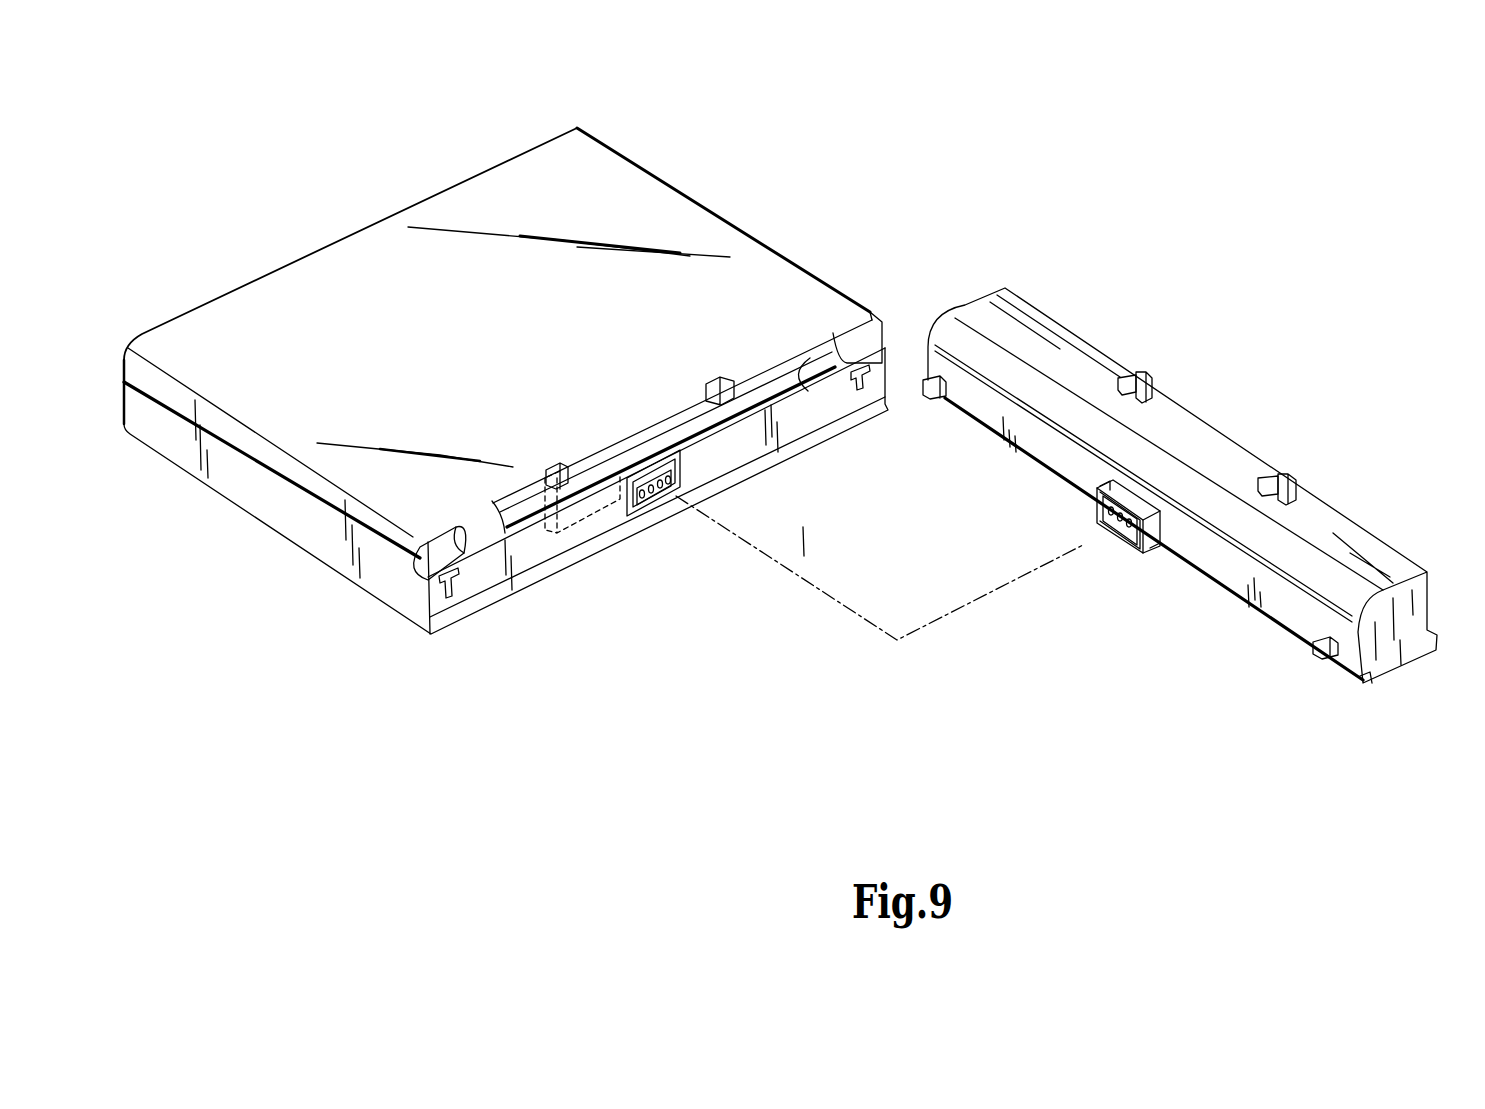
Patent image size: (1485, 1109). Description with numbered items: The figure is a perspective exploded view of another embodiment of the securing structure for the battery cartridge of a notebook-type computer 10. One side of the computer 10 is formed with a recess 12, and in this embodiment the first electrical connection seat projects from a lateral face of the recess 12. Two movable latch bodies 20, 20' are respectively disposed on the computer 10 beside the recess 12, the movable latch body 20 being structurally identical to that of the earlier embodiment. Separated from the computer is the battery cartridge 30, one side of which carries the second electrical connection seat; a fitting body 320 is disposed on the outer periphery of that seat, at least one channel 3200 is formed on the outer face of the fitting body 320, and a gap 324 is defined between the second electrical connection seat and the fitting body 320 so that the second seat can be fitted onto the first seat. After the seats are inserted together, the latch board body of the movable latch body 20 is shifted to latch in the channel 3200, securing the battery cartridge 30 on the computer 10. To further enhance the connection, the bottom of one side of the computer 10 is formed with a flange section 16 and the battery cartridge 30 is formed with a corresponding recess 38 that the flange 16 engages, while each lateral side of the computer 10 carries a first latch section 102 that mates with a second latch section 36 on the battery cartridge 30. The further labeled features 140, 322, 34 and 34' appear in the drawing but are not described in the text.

The notebook-type computer 10 is at (524, 423).
The recess 12 is at (687, 460).
The terminal slots of connector socket 140 is at (645, 503).
The flange section 16 is at (443, 624).
The movable latch body 20 is at (677, 353).
The movable latch body 20' is at (511, 435).
The first latch section 102 is at (453, 590).
The battery cartridge 30 is at (1183, 539).
The fitting body 320 is at (1135, 555).
The terminals of connector plug 322 is at (1117, 538).
The gap 324 is at (1090, 513).
The channel 3200 is at (1097, 483).
The hook member 34 is at (1185, 349).
The hook member 34' is at (1308, 422).
The second latch section 36 is at (930, 386).
The recess 38 is at (1353, 685).